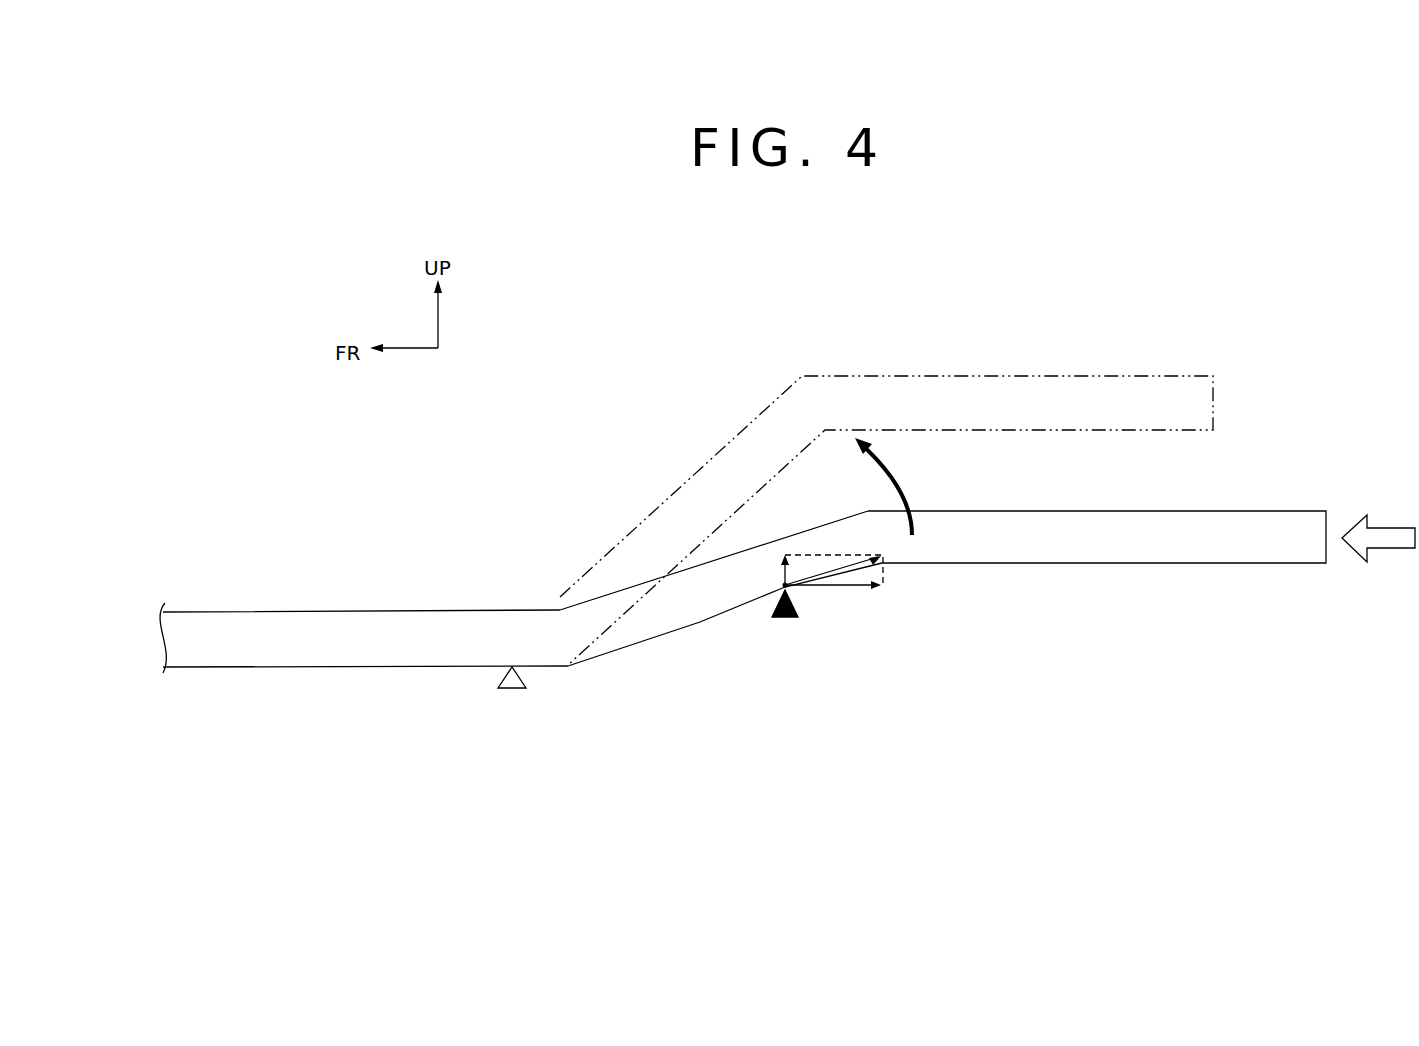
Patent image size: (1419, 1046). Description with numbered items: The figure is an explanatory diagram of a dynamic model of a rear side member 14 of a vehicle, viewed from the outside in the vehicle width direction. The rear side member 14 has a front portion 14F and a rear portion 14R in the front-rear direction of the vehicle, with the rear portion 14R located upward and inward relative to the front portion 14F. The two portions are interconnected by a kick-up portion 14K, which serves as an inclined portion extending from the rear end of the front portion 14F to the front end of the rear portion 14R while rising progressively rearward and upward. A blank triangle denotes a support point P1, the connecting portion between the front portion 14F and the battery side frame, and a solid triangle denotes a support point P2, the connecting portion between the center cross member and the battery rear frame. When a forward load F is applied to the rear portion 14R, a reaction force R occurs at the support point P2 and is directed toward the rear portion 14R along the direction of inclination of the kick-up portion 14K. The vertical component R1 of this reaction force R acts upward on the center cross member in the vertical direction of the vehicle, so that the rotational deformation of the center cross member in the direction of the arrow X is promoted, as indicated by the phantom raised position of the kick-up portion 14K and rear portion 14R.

The rear side member 14 is at (743, 561).
The front portion 14F is at (337, 668).
The kick-up portion 14K is at (697, 470).
The rear portion 14R is at (1225, 566).
The support point P1 is at (512, 690).
The support point P2 is at (784, 618).
The reaction force R is at (828, 570).
The vertical component R1 is at (784, 573).
The arrow X is at (897, 477).
The forward load F is at (1390, 549).